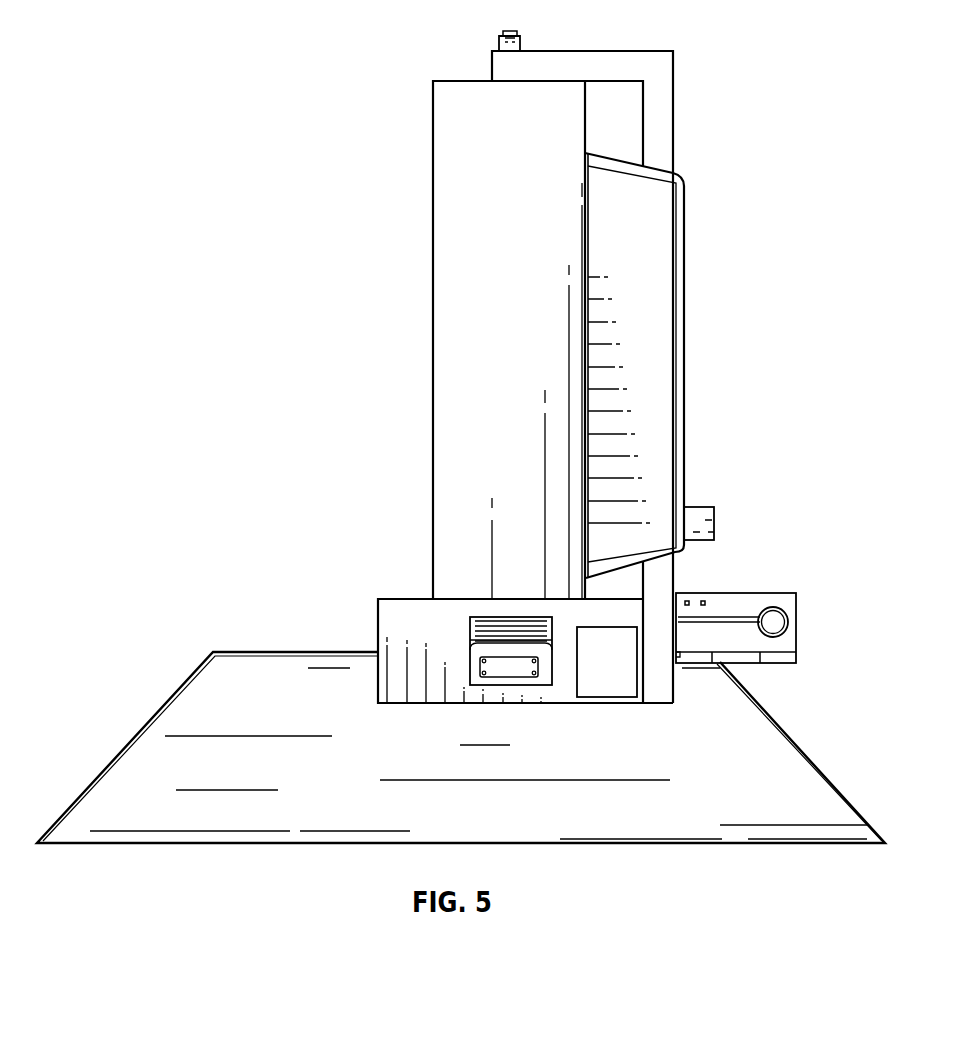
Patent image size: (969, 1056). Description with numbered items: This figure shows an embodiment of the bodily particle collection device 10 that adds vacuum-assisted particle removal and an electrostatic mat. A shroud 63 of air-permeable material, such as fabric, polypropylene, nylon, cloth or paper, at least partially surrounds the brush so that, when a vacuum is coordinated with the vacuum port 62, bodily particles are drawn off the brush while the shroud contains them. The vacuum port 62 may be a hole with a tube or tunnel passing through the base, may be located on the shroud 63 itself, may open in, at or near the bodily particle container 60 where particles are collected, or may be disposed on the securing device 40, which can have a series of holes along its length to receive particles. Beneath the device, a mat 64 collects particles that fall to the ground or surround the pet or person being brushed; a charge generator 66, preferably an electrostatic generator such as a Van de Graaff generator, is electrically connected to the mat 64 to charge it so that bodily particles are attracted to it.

The bodily particle collection device 10 is at (289, 38).
The securing device 40 is at (673, 88).
The shroud 63 is at (684, 343).
The vacuum port 62 is at (693, 507).
The charge generator 66 is at (740, 593).
The bodily particle container 60 is at (622, 669).
The mat 64 is at (187, 698).